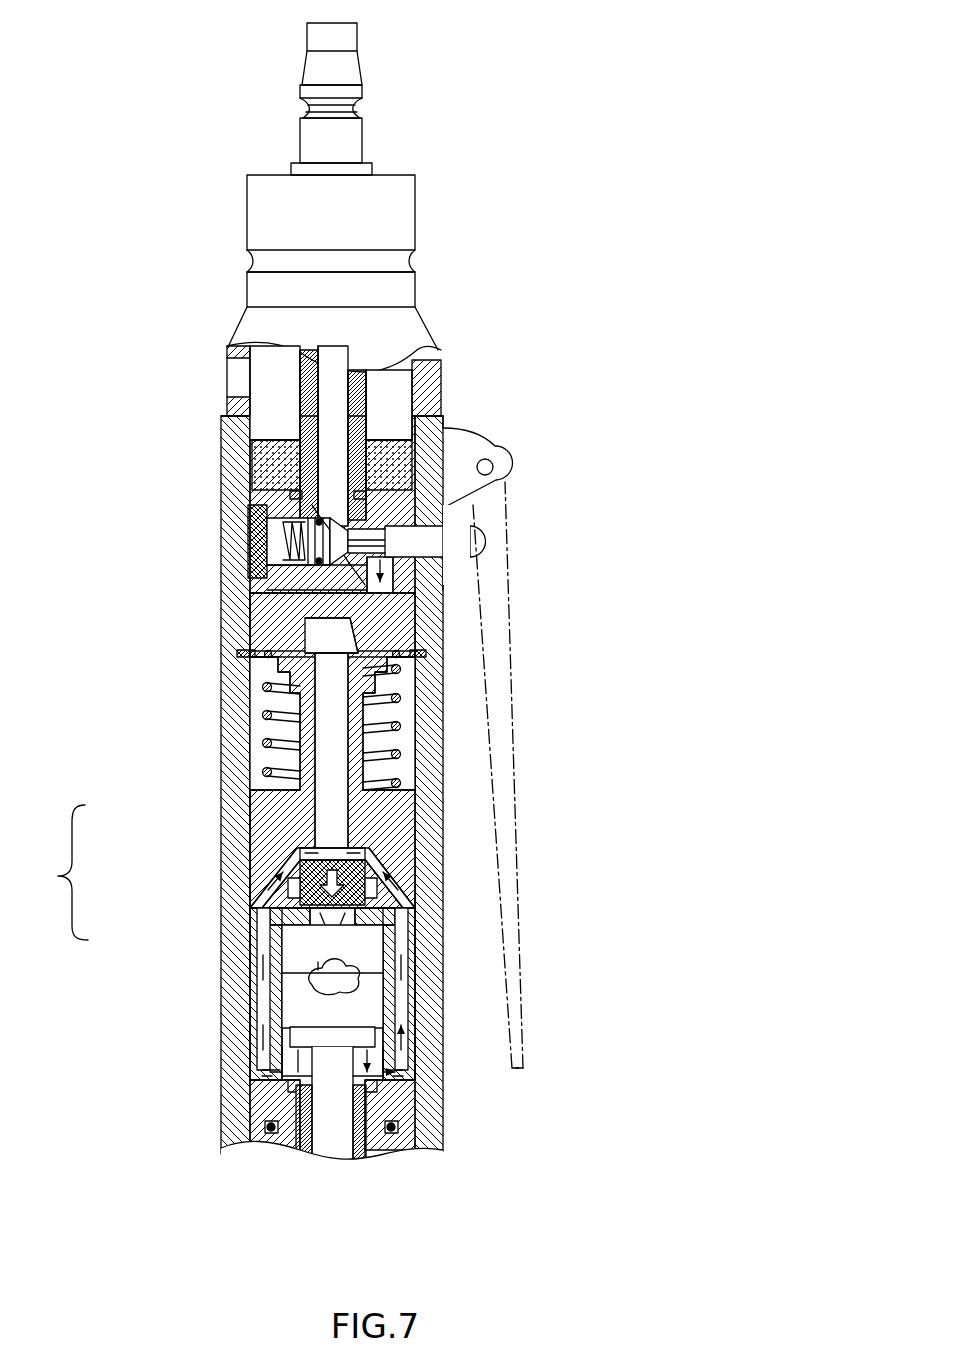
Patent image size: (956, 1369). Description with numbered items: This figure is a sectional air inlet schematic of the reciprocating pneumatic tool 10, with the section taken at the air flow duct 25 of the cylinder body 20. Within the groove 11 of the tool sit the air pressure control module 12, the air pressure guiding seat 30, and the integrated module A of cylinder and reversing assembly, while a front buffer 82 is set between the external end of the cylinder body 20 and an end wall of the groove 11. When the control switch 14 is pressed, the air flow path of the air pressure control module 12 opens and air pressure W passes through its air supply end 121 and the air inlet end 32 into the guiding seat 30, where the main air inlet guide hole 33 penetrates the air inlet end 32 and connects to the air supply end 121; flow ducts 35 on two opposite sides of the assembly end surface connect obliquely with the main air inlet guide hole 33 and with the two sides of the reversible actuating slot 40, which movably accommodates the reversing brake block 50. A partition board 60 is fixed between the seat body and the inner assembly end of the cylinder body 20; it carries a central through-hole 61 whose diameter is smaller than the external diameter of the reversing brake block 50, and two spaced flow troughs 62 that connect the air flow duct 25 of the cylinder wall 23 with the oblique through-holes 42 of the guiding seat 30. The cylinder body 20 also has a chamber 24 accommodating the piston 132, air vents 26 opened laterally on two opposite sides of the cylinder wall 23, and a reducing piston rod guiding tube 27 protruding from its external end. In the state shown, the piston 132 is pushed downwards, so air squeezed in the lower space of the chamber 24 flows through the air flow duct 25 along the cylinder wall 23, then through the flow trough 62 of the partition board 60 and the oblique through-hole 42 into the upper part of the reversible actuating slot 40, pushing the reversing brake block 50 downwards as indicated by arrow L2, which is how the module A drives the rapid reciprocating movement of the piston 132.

The reciprocating pneumatic tool 10 is at (600, 128).
The groove 11 is at (258, 702).
The air pressure control module 12 is at (245, 600).
The air supply end 121 is at (403, 690).
The piston 132 is at (405, 1048).
The control switch 14 is at (517, 848).
The cylinder body 20 is at (250, 972).
The cylinder wall 23 is at (258, 1046).
The chamber 24 is at (262, 1042).
The air flow duct 25 is at (262, 995).
The air vent 26 is at (262, 950).
The reducing piston rod guiding tube 27 is at (385, 1143).
The air pressure guiding seat 30 is at (255, 843).
The air inlet end 32 is at (400, 743).
The main air inlet guide hole 33 is at (248, 815).
The flow duct 35 is at (372, 925).
The reversible actuating slot 40 is at (388, 885).
The oblique through-hole 42 is at (405, 857).
The reversing brake block 50 is at (298, 893).
The partition board 60 is at (250, 918).
The through-hole 61 is at (385, 982).
The flow trough 62 is at (400, 915).
The front buffer 82 is at (264, 1127).
The air pressure W is at (262, 1075).
The arrow L2 is at (317, 953).
The integrated module of cylinder and reversing assembly A is at (60, 872).